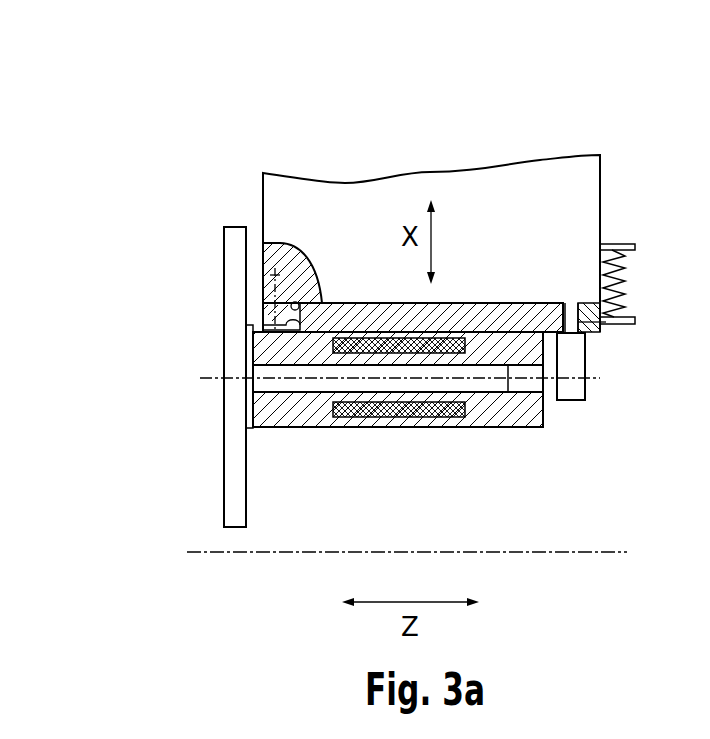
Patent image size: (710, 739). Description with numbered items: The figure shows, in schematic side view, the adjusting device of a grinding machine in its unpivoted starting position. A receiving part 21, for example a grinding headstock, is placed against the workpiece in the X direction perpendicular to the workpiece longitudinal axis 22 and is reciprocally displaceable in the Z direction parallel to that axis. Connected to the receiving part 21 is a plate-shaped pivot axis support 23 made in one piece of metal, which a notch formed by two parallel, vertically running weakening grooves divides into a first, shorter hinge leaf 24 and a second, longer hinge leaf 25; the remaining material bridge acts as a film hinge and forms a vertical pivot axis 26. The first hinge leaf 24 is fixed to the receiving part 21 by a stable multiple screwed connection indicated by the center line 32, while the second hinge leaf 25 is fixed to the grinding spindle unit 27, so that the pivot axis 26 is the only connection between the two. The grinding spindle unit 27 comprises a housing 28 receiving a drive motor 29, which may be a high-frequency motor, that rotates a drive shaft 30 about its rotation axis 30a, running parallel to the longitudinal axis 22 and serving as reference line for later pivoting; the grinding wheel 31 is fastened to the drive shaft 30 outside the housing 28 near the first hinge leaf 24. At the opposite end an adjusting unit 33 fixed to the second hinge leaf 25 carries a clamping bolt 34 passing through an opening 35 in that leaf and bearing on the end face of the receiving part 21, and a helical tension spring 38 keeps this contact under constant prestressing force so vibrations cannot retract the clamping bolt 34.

The receiving part 21 is at (370, 202).
The longitudinal axis 22 is at (522, 553).
The pivot axis support 23 is at (518, 296).
The first hinge leaf 24 is at (270, 313).
The second hinge leaf 25 is at (445, 312).
The pivot axis 26 is at (300, 263).
The grinding spindle unit 27 is at (518, 438).
The housing 28 is at (303, 408).
The drive motor 29 is at (422, 412).
The drive shaft 30 is at (256, 384).
The rotation axis 30a is at (225, 378).
The grinding wheel 31 is at (232, 478).
The center line 32 is at (277, 275).
The adjusting unit 33 is at (583, 390).
The clamping bolt 34 is at (606, 312).
The opening 35 is at (593, 335).
The helical tension spring 38 is at (622, 283).